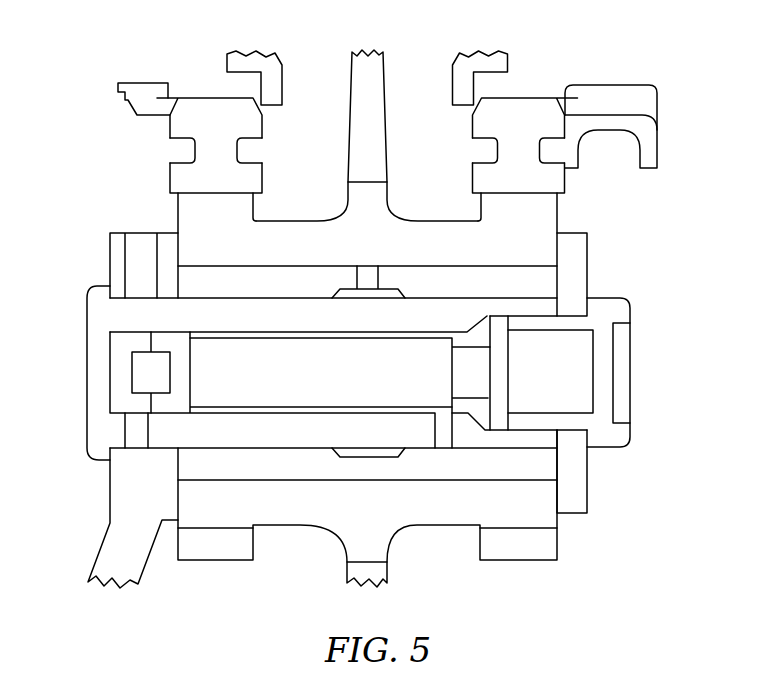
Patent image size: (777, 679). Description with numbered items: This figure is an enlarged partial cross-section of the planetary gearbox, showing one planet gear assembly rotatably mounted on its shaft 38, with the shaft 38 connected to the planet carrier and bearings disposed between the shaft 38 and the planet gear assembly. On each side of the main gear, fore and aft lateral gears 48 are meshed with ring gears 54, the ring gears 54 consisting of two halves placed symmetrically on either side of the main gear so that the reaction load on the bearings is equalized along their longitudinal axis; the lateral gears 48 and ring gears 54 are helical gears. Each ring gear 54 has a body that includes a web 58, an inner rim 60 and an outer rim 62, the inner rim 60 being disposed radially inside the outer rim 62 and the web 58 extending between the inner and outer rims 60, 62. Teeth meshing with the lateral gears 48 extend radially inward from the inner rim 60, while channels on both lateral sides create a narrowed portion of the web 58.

The shaft 38 is at (580, 400).
The lateral gear 48 is at (193, 226).
The ring gear 54 is at (214, 89).
The web 58 is at (168, 151).
The inner rim 60 is at (170, 175).
The outer rim 62 is at (170, 131).